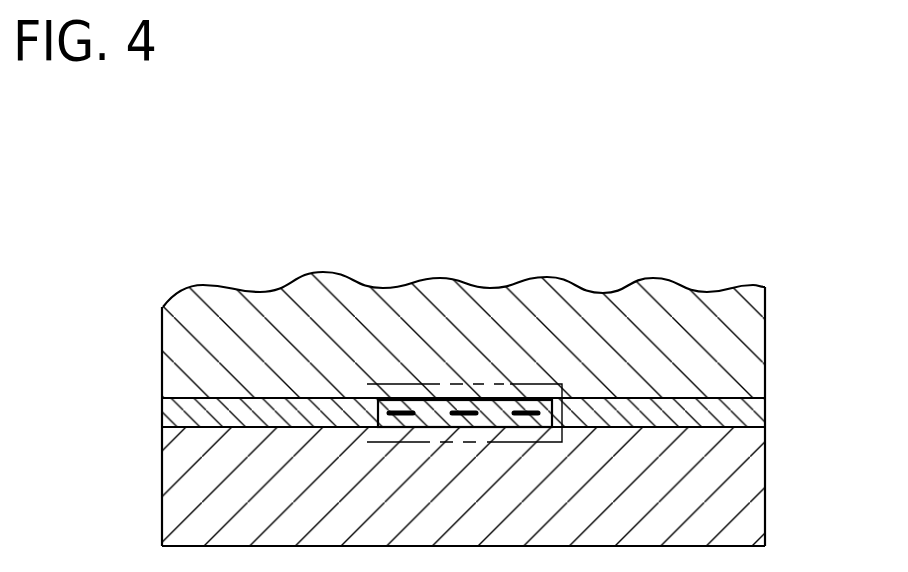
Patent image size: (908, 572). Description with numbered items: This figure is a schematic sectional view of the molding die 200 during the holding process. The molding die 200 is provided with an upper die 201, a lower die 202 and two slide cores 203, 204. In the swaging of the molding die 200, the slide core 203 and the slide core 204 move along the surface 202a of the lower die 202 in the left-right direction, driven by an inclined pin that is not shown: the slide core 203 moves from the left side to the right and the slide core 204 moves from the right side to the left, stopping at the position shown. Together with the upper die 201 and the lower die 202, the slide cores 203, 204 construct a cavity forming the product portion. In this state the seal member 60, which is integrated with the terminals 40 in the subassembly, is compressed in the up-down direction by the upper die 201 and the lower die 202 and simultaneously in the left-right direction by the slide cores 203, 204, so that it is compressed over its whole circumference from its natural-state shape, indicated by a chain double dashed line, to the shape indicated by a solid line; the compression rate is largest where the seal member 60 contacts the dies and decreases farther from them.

The molding die 200 is at (112, 176).
The upper die 201 is at (162, 328).
The lower die 202 is at (162, 478).
The surface of the lower die 202a is at (197, 427).
The slide core 203 is at (162, 413).
The slide core 204 is at (765, 415).
The terminals 40 is at (404, 410).
The seal member 60 is at (441, 410).